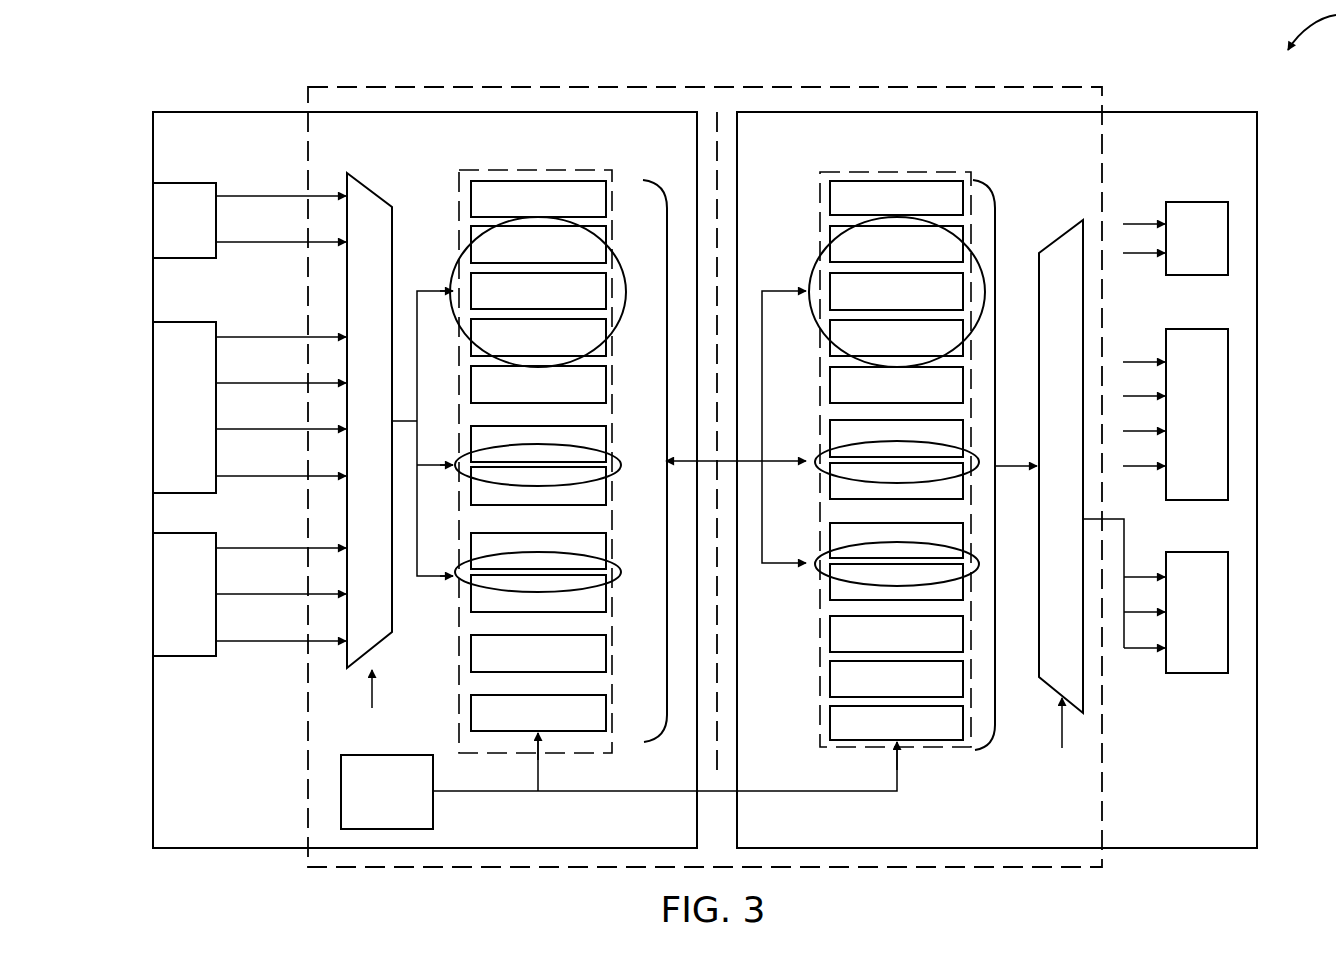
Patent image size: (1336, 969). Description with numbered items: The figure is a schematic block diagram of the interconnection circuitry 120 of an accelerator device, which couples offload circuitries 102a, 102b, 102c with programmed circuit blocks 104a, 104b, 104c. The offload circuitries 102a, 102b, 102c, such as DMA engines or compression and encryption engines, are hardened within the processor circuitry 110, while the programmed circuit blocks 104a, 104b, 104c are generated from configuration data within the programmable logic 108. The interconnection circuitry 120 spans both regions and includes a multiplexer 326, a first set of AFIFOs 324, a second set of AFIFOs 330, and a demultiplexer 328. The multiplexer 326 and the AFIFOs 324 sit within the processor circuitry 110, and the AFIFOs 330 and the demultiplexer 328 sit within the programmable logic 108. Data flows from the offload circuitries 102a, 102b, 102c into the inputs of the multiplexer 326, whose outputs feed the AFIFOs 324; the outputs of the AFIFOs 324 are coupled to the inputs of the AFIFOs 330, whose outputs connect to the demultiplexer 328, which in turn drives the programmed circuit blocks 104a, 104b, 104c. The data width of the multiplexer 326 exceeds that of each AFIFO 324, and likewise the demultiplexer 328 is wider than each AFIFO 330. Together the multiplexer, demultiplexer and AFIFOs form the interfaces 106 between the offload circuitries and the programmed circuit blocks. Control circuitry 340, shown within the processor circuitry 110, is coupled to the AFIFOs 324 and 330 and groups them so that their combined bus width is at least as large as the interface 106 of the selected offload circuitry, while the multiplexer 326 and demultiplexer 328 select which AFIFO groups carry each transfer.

The offload circuitry 102a is at (212, 232).
The offload circuitry 102b is at (212, 421).
The offload circuitry 102c is at (212, 607).
The programmed circuit block 104a is at (1224, 252).
The programmed circuit block 104b is at (1224, 438).
The programmed circuit block 104c is at (1224, 624).
The interfaces 106 is at (235, 192).
The programmable logic 108 is at (1153, 112).
The processor circuitry 110 is at (468, 112).
The interconnection circuitry 120 is at (822, 87).
The AFIFOs 324 is at (543, 170).
The multiplexer 326 is at (373, 190).
The demultiplexer 328 is at (1050, 245).
The AFIFOs 330 is at (903, 170).
The control circuitry 340 is at (363, 805).